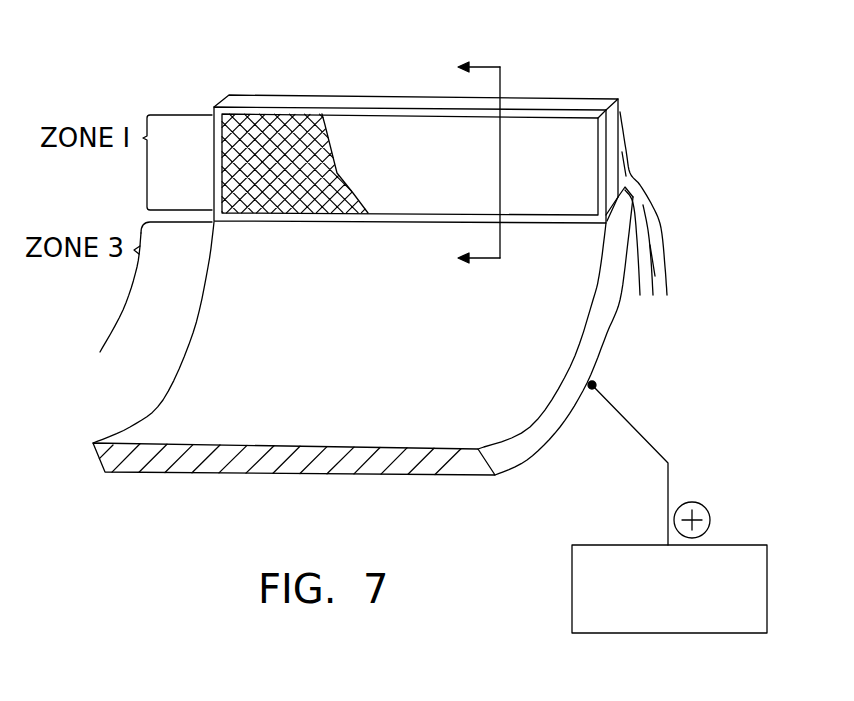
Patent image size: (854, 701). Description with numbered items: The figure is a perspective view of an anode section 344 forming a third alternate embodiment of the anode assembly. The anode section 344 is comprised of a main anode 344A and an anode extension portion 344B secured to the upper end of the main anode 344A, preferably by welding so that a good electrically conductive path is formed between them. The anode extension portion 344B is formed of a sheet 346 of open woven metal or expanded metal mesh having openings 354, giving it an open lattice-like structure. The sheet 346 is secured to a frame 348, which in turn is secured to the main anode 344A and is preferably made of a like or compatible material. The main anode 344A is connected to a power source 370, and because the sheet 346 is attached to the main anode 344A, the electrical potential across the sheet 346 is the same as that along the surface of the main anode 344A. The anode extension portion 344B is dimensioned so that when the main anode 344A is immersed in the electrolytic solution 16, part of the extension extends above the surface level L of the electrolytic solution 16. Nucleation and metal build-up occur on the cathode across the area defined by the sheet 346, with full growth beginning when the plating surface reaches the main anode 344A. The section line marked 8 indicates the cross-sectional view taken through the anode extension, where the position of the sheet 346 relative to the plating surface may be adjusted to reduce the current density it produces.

The electrolytic solution 16 is at (658, 276).
The anode section 344 is at (613, 343).
The main anode 344A is at (523, 440).
The anode extension portion 344B is at (415, 128).
The sheet 346 is at (300, 155).
The frame 348 is at (245, 100).
The openings 354 is at (273, 140).
The power source 370 is at (725, 542).
The surface level L is at (609, 107).
The section line 8 is at (500, 161).